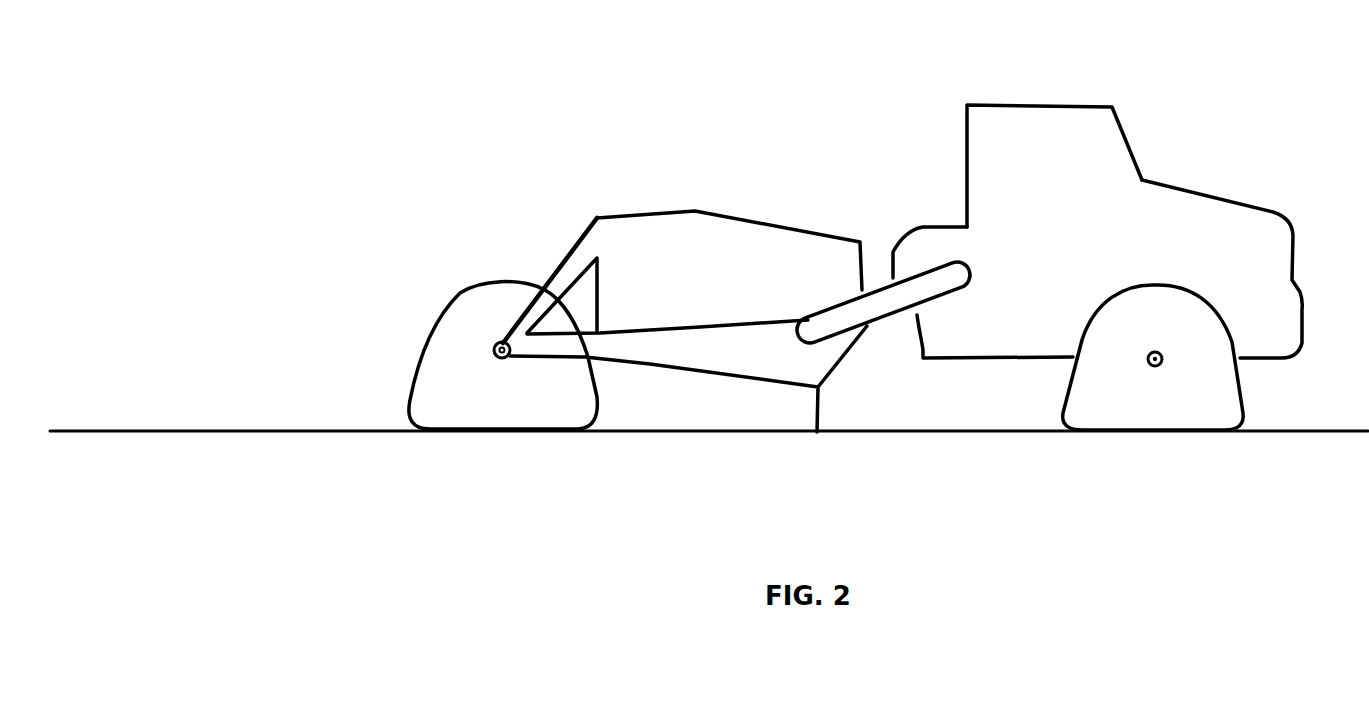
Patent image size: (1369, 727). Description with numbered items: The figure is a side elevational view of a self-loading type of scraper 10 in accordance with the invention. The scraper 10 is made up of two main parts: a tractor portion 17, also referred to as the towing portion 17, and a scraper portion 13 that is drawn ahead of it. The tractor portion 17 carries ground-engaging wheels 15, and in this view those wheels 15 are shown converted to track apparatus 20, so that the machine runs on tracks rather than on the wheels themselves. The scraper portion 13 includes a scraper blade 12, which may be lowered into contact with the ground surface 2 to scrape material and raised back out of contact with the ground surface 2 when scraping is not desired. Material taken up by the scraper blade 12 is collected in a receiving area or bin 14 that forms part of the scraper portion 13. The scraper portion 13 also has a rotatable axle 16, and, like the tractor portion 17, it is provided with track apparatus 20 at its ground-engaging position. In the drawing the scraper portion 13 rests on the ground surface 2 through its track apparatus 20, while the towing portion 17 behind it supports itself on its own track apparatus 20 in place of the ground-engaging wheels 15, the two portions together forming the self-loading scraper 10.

The ground surface 2 is at (298, 428).
The scraper 10 is at (883, 90).
The scraper blade 12 is at (817, 432).
The scraper portion 13 is at (705, 262).
The receiving area or bin 14 is at (783, 272).
The ground-engaging wheels 15 is at (1167, 413).
The rotatable axle 16 is at (502, 342).
The tractor portion 17 is at (1125, 222).
The track apparatus 20 is at (443, 313).